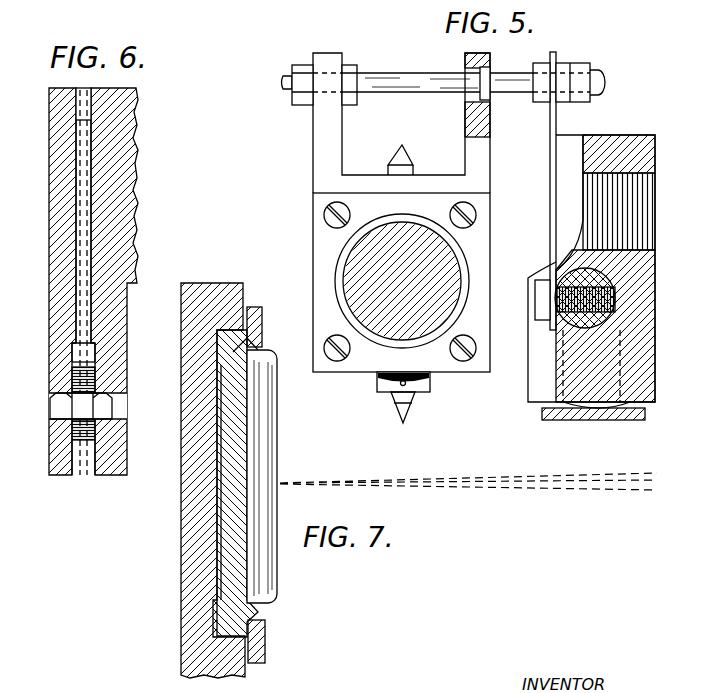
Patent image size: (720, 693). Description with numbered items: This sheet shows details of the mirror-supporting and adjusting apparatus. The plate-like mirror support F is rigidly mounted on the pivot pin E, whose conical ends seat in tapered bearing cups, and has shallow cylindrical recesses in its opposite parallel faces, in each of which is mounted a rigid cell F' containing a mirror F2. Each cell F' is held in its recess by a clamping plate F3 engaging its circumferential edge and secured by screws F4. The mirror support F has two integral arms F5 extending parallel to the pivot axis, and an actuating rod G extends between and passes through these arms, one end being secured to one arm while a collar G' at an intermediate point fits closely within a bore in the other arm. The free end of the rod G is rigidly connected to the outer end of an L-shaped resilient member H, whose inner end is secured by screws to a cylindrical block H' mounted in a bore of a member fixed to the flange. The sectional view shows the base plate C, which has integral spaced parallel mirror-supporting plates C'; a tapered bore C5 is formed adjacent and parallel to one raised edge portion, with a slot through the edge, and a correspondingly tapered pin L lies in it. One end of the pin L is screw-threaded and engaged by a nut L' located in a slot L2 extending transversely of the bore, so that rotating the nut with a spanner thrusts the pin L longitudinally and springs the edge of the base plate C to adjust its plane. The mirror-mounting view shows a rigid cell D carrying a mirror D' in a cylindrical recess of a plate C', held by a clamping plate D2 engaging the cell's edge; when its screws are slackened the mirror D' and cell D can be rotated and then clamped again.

In FIG. 6, the base plate C is at (58, 297).
In FIG. 6, the mirror-supporting plates C' is at (110, 281).
In FIG. 7, the mirror-supporting plates C' is at (213, 463).
In FIG. 6, the tapered bore C5 is at (82, 111).
In FIG. 6, the tapered pin L is at (118, 282).
In FIG. 6, the nut L' is at (114, 401).
In FIG. 6, the slot L2 is at (115, 410).
In FIG. 7, the cell D is at (255, 482).
In FIG. 7, the mirror D' is at (283, 476).
In FIG. 7, the clamping plate D2 is at (262, 317).
In FIG. 5, the mirror support F is at (376, 273).
In FIG. 5, the cell F' is at (369, 279).
In FIG. 5, the mirror F2 is at (367, 263).
In FIG. 5, the clamping plate F3 is at (333, 302).
In FIG. 5, the screws F4 is at (333, 358).
In FIG. 5, the arms F5 is at (322, 133).
In FIG. 5, the actuating rod G is at (408, 73).
In FIG. 5, the collar G' is at (505, 101).
In FIG. 5, the resilient member H is at (557, 191).
In FIG. 5, the cylindrical block H' is at (581, 277).
In FIG. 5, the pivot pin E is at (410, 398).